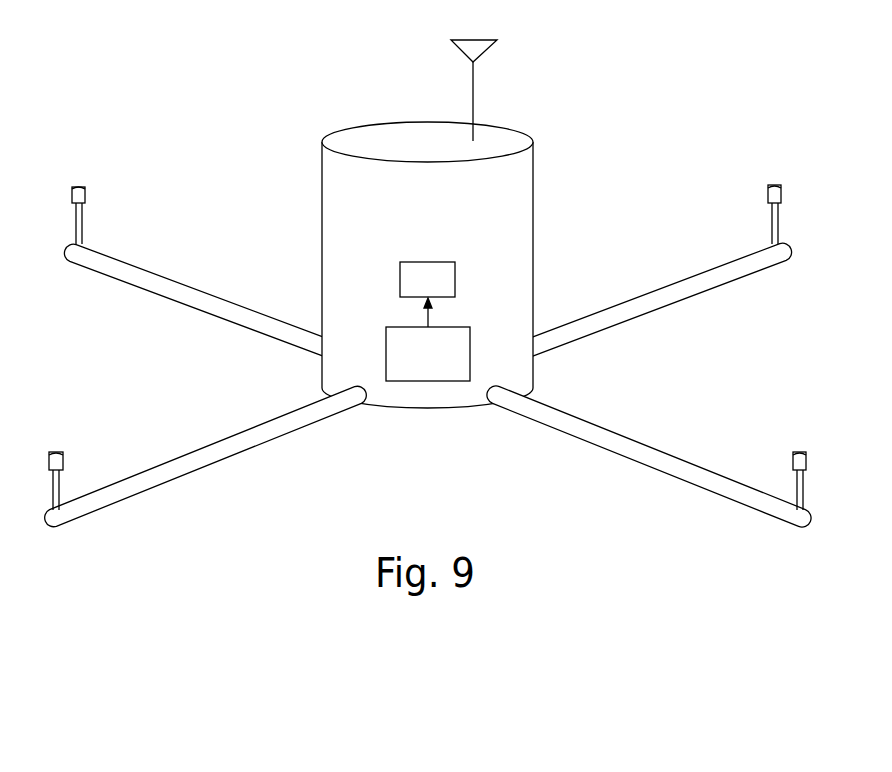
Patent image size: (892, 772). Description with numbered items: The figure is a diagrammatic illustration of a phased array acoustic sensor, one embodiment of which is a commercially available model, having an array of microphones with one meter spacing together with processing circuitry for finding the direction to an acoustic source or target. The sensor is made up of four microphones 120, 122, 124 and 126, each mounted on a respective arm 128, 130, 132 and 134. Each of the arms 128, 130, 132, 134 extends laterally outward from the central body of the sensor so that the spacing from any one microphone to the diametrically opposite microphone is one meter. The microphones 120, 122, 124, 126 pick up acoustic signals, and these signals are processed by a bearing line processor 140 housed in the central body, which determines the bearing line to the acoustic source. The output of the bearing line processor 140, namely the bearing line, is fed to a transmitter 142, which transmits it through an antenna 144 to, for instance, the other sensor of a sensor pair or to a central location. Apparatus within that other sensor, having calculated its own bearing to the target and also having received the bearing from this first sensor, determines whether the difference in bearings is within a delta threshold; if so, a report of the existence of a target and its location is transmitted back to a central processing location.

The microphone 120 is at (70, 197).
The microphone 122 is at (782, 192).
The microphone 124 is at (806, 463).
The microphone 126 is at (65, 457).
The arm 128 is at (191, 289).
The arm 130 is at (637, 300).
The arm 132 is at (673, 457).
The arm 134 is at (218, 443).
The bearing line processor 140 is at (470, 343).
The transmitter 142 is at (460, 272).
The antenna 144 is at (483, 40).